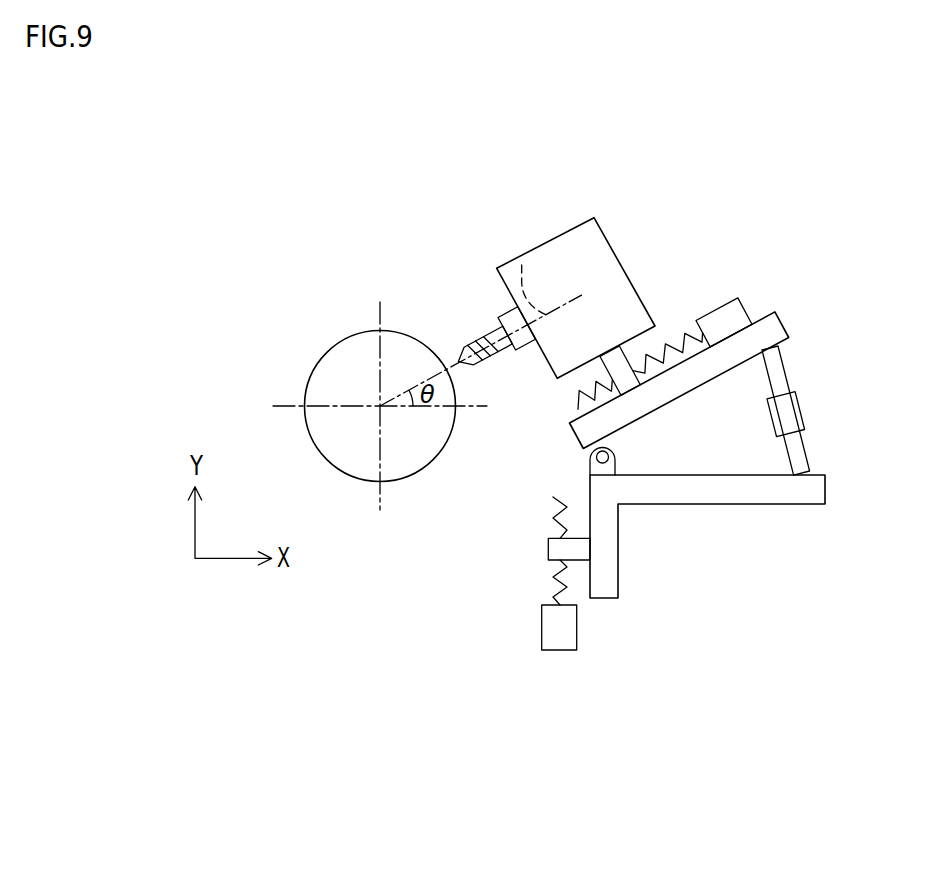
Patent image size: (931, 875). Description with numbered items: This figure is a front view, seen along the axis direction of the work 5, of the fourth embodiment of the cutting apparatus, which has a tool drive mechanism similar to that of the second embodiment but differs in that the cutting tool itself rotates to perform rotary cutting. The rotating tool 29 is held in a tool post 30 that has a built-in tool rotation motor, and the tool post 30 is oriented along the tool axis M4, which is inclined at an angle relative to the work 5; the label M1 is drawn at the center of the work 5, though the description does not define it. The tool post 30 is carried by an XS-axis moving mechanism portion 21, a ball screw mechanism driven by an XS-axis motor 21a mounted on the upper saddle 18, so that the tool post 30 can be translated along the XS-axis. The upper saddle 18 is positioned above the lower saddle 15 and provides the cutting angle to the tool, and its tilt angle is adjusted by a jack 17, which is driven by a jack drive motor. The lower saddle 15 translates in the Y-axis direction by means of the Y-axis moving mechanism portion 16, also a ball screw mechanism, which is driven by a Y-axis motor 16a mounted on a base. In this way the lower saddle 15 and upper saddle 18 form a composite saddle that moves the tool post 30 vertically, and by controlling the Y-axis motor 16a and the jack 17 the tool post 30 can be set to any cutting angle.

The work 5 is at (347, 338).
The workpiece rotation motor M1 is at (380, 406).
The rotating tool 29 is at (475, 338).
The tool post 30 is at (552, 238).
The tool axis M4 is at (522, 262).
The XS-axis moving mechanism portion 21 is at (541, 432).
The XS-axis motor 21a is at (712, 310).
The upper saddle 18 is at (772, 332).
The jack 17 is at (788, 415).
The lower saddle 15 is at (762, 505).
The Y-axis moving mechanism portion 16 is at (520, 603).
The Y-axis motor 16a is at (562, 650).